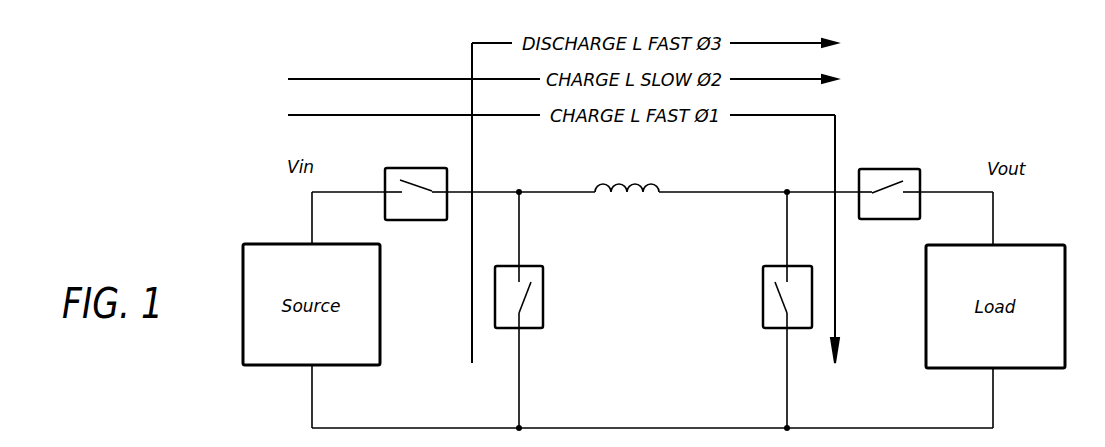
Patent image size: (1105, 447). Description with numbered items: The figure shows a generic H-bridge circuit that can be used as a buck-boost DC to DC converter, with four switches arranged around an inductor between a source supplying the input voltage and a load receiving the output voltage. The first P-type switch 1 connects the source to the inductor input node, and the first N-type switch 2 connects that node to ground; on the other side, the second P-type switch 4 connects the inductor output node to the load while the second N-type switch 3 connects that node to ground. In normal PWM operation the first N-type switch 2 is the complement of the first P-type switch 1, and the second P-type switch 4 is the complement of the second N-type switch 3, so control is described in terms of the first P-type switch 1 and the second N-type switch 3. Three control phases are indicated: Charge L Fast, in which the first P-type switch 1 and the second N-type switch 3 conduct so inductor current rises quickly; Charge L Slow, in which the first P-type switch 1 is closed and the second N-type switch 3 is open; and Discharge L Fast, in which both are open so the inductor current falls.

The switch P1 1 is at (416, 181).
The switch N1 2 is at (515, 283).
The switch N2 3 is at (793, 283).
The switch P2 4 is at (889, 180).